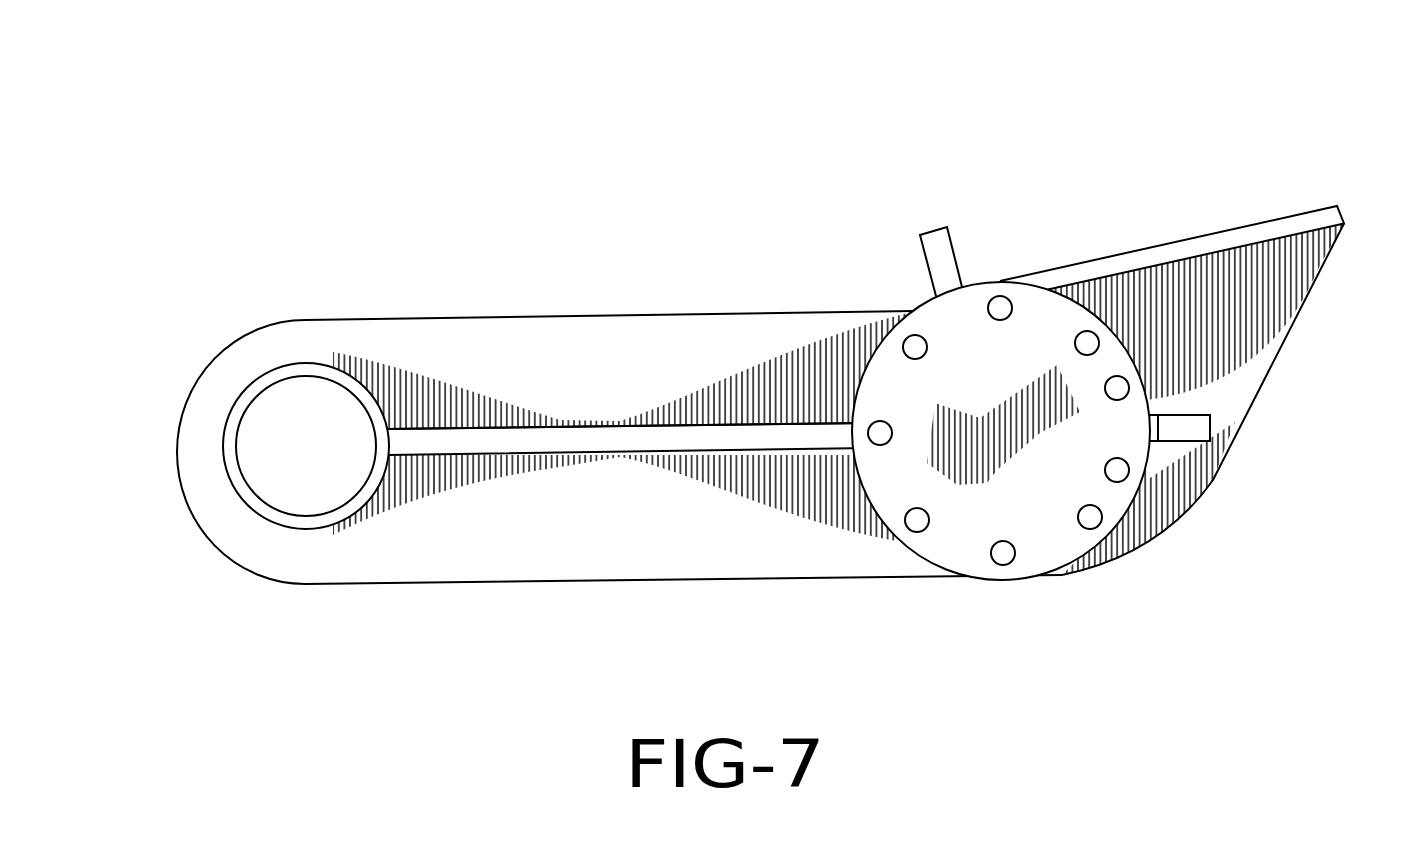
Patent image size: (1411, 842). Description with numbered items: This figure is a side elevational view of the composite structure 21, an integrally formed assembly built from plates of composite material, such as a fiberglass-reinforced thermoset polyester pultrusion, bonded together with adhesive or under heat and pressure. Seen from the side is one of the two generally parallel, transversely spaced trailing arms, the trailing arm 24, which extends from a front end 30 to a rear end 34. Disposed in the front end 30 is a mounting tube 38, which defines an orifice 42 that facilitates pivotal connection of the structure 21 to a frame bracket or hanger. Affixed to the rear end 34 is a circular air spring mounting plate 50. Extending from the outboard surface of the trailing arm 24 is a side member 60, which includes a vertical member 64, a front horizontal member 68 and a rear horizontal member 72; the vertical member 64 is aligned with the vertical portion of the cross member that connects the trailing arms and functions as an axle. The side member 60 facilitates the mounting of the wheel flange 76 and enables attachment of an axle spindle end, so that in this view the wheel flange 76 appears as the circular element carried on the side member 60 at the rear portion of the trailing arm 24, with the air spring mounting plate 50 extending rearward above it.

The composite structure 21 is at (115, 173).
The trailing arm 24 is at (430, 583).
The front end 30 is at (178, 470).
The rear end 34 is at (1303, 305).
The mounting tube 38 is at (222, 432).
The orifice 42 is at (287, 410).
The circular air spring mounting plate 50 is at (1257, 227).
The side member 60 is at (628, 452).
The vertical member 64 is at (935, 243).
The front horizontal member 68 is at (583, 438).
The rear horizontal member 72 is at (1190, 427).
The wheel flange 76 is at (1040, 543).